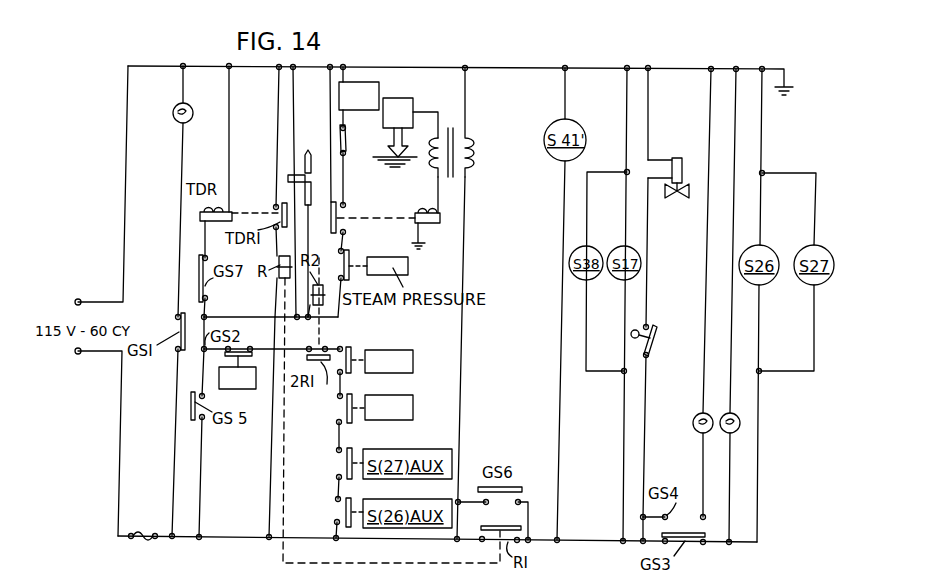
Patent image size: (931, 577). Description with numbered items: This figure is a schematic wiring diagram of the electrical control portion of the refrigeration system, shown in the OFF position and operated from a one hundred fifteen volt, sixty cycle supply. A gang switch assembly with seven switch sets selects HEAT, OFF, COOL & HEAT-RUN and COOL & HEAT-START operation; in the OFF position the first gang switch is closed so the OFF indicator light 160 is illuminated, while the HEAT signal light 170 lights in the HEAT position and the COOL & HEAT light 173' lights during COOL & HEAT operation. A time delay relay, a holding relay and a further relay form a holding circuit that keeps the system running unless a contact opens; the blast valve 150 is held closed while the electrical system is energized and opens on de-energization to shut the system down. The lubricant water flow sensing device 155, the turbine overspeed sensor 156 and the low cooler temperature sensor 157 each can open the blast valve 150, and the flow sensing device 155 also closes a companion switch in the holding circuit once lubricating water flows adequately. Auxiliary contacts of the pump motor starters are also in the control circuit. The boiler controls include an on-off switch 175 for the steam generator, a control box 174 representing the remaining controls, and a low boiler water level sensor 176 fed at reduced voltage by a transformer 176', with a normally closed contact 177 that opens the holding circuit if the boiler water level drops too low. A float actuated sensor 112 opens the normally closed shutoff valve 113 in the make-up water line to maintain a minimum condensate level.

The OFF indicator light 160 is at (173, 113).
The on-off switch 175 is at (339, 139).
The control box 174 is at (359, 96).
The low boiler water level sensor 176 is at (400, 113).
The transformer 176' is at (472, 122).
The blast valve 150 is at (312, 178).
The normally closed contact 177 is at (338, 224).
The shutoff valve 113 is at (678, 159).
The float actuated sensor 112 is at (656, 337).
The HEAT signal light 170 is at (693, 421).
The COOL & HEAT light 173' is at (756, 418).
The sensor 157 is at (238, 370).
The overspeed sensor 156 is at (376, 361).
The flow sensing device 155 is at (375, 409).